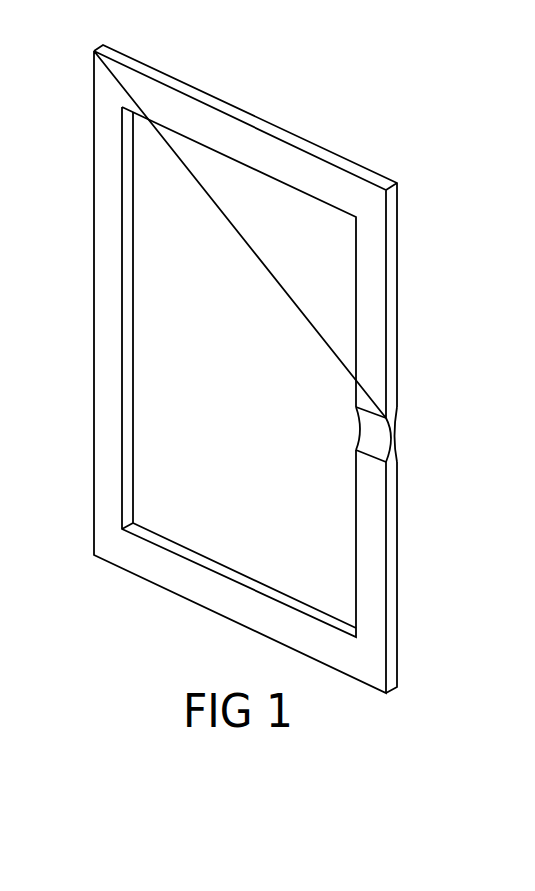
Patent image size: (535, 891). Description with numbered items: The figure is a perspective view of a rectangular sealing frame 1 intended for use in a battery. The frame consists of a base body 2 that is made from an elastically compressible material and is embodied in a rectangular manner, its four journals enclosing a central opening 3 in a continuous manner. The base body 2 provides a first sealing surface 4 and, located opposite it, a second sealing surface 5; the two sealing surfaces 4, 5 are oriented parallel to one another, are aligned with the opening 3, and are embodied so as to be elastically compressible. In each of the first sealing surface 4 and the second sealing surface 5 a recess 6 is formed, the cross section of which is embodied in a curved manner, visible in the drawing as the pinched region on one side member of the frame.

The sealing frame 1 is at (187, 112).
The base body 2 is at (375, 240).
The opening 3 is at (160, 482).
The first sealing surface 4 is at (105, 162).
The second sealing surface 5 is at (367, 172).
The recess 6 is at (377, 435).